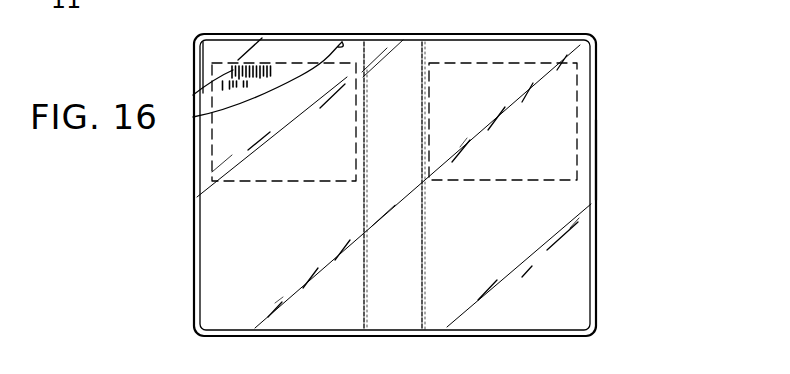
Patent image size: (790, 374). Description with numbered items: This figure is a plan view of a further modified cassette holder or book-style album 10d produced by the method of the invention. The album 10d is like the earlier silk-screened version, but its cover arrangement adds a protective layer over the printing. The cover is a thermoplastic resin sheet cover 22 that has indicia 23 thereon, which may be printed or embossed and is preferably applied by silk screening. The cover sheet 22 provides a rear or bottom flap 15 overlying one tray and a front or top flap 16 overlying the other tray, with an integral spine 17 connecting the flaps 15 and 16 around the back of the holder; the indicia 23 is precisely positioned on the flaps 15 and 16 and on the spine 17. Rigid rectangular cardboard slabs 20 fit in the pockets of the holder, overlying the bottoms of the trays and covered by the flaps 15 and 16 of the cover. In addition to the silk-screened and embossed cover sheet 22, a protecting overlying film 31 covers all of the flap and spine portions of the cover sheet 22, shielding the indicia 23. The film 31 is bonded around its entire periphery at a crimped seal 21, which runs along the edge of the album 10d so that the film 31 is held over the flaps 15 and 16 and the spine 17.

The album 10d is at (599, 69).
The rear or bottom flap 15 is at (297, 265).
The front or top flap 16 is at (490, 267).
The spine 17 is at (378, 268).
The cardboard slab 20 is at (202, 40).
The crimped seal 21 is at (598, 157).
The cover sheet 22 is at (288, 45).
The indicia 23 is at (260, 61).
The protecting overlying film 31 is at (342, 42).